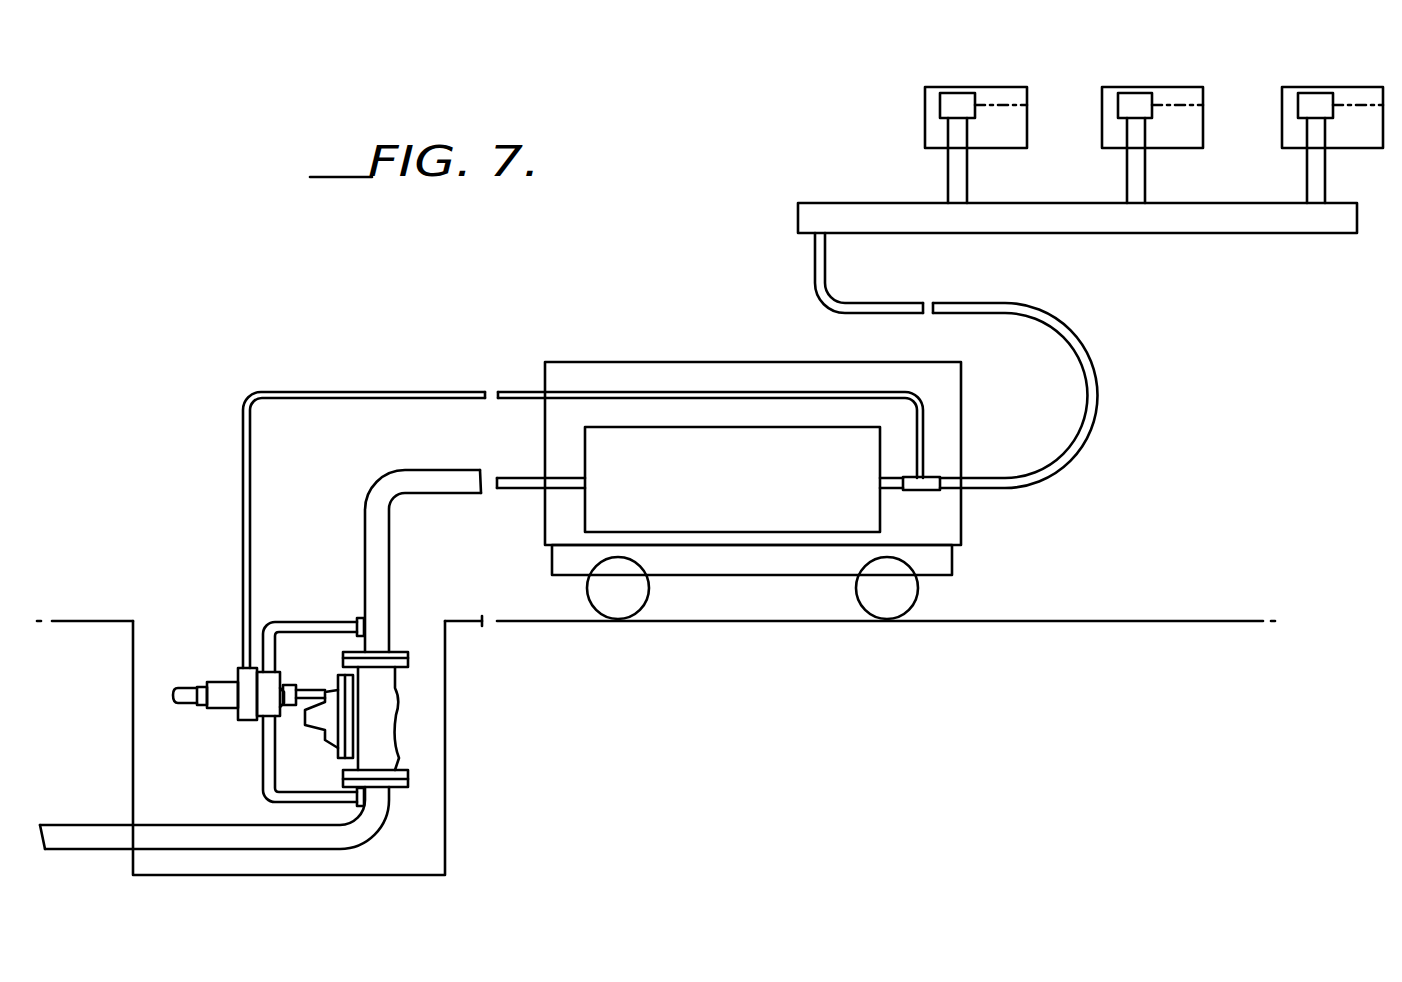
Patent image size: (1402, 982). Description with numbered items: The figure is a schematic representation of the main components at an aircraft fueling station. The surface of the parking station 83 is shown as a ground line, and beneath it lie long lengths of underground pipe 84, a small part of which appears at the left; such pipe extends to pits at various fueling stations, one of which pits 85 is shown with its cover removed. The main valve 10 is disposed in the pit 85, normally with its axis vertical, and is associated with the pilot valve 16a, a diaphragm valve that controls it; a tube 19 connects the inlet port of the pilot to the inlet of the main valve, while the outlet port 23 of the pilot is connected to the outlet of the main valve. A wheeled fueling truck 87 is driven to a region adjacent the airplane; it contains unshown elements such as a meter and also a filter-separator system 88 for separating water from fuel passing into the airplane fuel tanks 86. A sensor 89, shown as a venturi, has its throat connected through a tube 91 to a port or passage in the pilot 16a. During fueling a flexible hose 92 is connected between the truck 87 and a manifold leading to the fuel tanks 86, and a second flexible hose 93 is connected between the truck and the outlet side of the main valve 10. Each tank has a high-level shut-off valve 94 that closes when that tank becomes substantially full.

The main valve 10 is at (400, 730).
The pilot valve 16a is at (225, 675).
The tube 19 is at (318, 778).
The outlet port 23 is at (322, 596).
The surface of the parking station 83 is at (77, 621).
The underground pipe 84 is at (197, 828).
The pit 85 is at (433, 844).
The fuel tanks 86 is at (905, 117).
The fueling truck 87 is at (612, 362).
The filter-separator system 88 is at (712, 532).
The sensor 89 is at (930, 490).
The tube 91 is at (488, 392).
The flexible hose 92 is at (910, 302).
The second flexible hose 93 is at (500, 470).
The high-level shut-off valve 94 is at (960, 92).